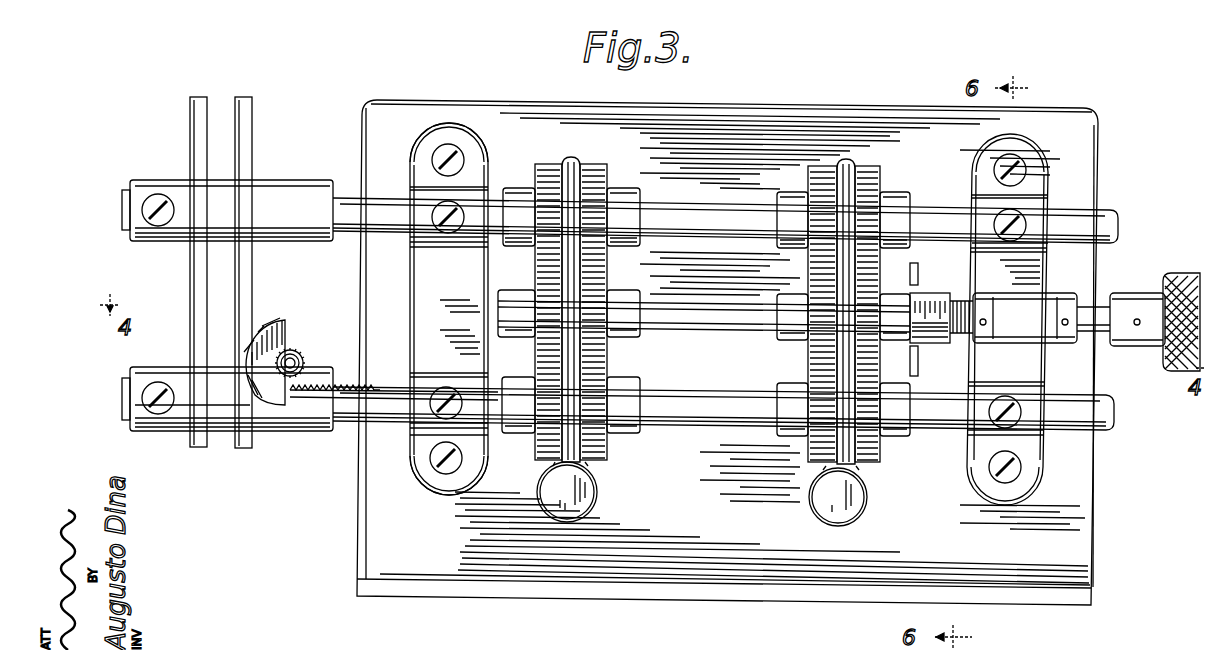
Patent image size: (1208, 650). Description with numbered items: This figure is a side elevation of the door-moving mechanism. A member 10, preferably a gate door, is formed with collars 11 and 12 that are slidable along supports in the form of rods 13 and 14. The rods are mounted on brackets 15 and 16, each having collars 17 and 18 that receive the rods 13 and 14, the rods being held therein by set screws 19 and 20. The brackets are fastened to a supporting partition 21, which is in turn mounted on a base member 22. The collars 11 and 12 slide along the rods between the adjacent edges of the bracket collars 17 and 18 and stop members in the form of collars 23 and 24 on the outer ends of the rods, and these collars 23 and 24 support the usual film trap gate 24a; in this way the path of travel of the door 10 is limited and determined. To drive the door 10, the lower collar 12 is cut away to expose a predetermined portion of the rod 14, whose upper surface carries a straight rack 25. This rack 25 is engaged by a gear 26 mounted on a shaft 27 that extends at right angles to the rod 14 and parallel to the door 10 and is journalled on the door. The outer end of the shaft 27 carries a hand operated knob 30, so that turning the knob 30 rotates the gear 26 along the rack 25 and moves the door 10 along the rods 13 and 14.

The member 10 is at (252, 270).
The collar 11 is at (312, 166).
The collar 12 is at (297, 431).
The rod 13 is at (350, 240).
The rod 14 is at (348, 420).
The bracket 15 is at (410, 313).
The bracket 16 is at (1033, 368).
The collar 17 is at (410, 191).
The collar 18 is at (972, 196).
The set screw 19 is at (436, 228).
The set screw 20 is at (438, 394).
The supporting partition 21 is at (704, 295).
The base member 22 is at (700, 596).
The collar 23 is at (142, 186).
The collar 24 is at (146, 432).
The film trap gate 24a is at (196, 284).
The straight rack 25 is at (350, 386).
The gear 26 is at (298, 346).
The shaft 27 is at (293, 363).
The knob 30 is at (274, 330).